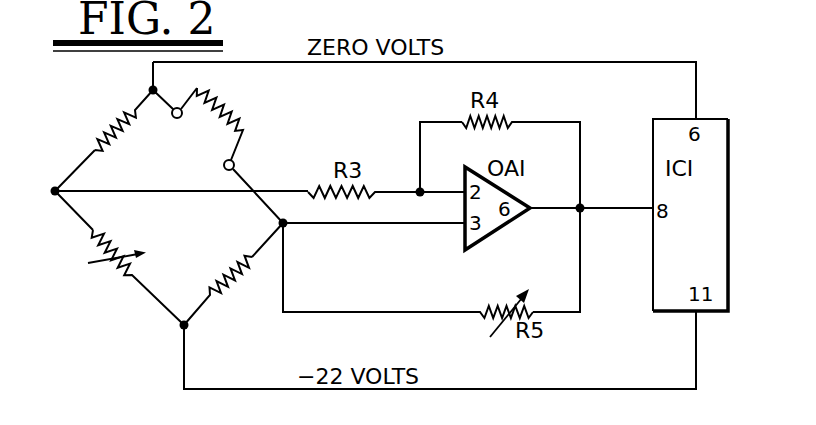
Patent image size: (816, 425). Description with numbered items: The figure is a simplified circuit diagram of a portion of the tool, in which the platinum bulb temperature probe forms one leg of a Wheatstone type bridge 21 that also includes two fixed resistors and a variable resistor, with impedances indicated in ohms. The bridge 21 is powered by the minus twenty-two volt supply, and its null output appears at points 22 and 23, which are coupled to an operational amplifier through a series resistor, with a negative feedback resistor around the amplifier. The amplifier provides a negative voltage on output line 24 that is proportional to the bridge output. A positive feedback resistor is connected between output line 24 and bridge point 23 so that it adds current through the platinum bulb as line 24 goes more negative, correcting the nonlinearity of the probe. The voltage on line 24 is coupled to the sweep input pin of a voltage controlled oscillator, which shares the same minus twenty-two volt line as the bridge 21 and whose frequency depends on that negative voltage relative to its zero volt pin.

The bridge 21 is at (206, 225).
The bridge point 22 is at (40, 174).
The bridge point 23 is at (303, 237).
The output line 24 is at (609, 208).